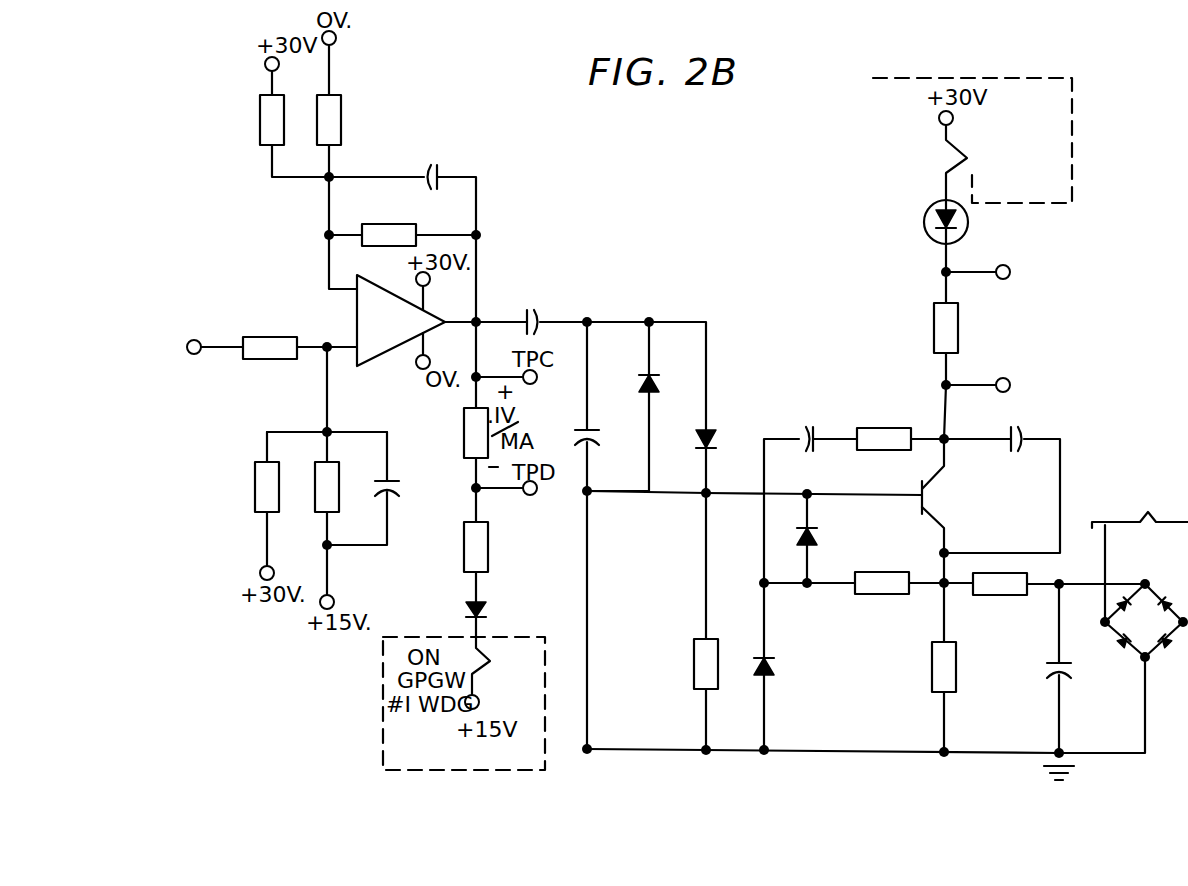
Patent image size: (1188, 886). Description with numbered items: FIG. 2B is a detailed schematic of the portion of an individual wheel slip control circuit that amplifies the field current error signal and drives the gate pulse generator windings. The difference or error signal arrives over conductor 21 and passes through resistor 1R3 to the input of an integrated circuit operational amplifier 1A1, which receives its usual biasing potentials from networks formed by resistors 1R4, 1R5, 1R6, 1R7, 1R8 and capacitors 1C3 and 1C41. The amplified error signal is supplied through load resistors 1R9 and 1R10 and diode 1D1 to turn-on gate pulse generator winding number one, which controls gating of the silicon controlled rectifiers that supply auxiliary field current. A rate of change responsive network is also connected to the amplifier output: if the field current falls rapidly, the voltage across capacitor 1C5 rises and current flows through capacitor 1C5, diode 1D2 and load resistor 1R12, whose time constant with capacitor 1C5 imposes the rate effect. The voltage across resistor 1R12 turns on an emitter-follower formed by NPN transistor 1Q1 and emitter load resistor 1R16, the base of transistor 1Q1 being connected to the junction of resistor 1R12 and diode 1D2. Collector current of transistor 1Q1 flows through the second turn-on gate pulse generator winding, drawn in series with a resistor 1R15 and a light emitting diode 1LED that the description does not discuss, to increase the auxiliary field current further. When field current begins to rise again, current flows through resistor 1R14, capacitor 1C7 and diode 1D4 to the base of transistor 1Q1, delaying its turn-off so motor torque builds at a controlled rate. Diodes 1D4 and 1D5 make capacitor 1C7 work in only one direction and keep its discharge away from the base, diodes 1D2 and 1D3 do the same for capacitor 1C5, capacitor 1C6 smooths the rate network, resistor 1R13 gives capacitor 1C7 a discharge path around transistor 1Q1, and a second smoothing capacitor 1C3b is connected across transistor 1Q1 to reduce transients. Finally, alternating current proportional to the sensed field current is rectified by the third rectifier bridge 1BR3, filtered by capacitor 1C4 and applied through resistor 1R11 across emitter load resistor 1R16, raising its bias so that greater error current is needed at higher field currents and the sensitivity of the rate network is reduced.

The conductor 21 is at (188, 343).
The resistor 1R3 is at (279, 335).
The resistor 1R4 is at (350, 104).
The resistor 1R5 is at (402, 221).
The resistor 1R6 is at (273, 117).
The resistor 1R7 is at (247, 506).
The resistor 1R8 is at (309, 520).
The load resistor 1R9 is at (457, 448).
The load resistor 1R10 is at (450, 545).
The resistor 1R11 is at (1044, 597).
The load resistor 1R12 is at (682, 621).
The resistor 1R13 is at (854, 571).
The resistor 1R14 is at (900, 427).
The resistor 1R15 is at (923, 328).
The emitter load resistor 1R16 is at (917, 667).
The capacitor 1C3 is at (363, 488).
The smoothing capacitor 1C3b is at (1002, 480).
The capacitor 1C4 is at (1037, 668).
The capacitor 1C41 is at (412, 191).
The capacitor 1C5 is at (531, 307).
The smoothing capacitor 1C6 is at (569, 535).
The capacitor 1C7 is at (810, 494).
The operational amplifier 1A1 is at (401, 320).
The diode 1D1 is at (452, 653).
The diode 1D2 is at (688, 443).
The diode 1D3 is at (623, 406).
The diode 1D4 is at (793, 538).
The diode 1D5 is at (748, 666).
The NPN transistor 1Q1 is at (944, 496).
The light emitting diode 1LED is at (899, 205).
The third rectifier bridge 1BR3 is at (1140, 587).